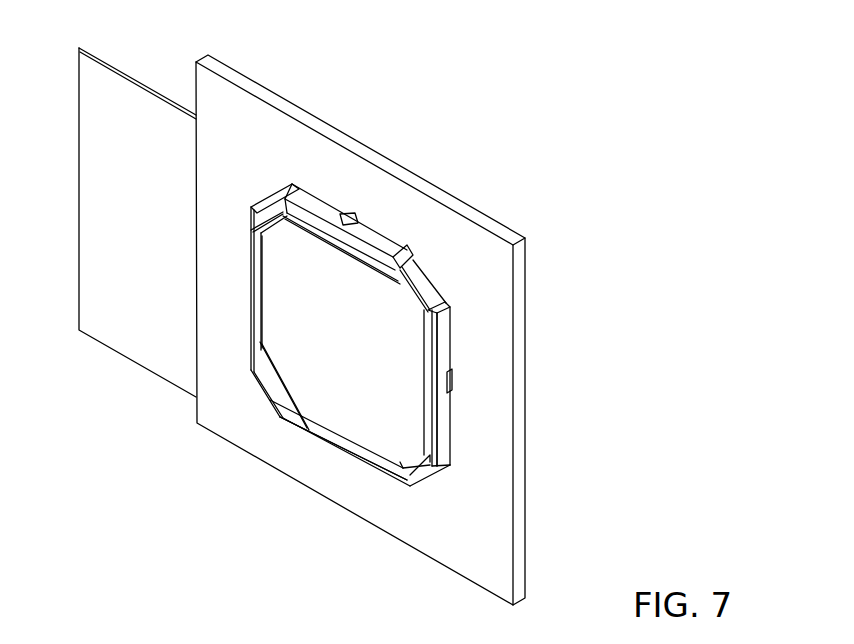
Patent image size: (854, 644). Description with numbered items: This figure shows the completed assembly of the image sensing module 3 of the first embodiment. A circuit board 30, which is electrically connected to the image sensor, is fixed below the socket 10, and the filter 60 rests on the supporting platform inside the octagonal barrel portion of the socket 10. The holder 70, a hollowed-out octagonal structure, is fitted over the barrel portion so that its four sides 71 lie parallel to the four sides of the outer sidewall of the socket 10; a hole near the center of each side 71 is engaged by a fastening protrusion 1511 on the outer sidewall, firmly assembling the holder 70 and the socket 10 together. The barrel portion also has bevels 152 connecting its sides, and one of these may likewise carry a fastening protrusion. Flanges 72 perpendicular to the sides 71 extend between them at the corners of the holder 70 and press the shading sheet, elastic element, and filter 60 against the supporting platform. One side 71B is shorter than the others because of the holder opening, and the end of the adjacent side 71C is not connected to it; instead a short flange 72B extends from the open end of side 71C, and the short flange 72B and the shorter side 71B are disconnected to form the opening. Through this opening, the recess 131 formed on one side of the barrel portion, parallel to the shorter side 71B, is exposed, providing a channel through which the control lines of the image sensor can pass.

The image sensing module 3 is at (652, 67).
The circuit board 30 is at (148, 88).
The socket 10 is at (500, 353).
The filter 60 is at (413, 345).
The holder 70 is at (388, 242).
The side 71 is at (317, 195).
The fastening protrusion 1511 is at (358, 212).
The bevel 152 is at (420, 275).
The flange 72 is at (267, 212).
The side 71C is at (467, 312).
The shorter side 71B is at (338, 433).
The recess 131 is at (403, 468).
The short flange 72B is at (447, 472).